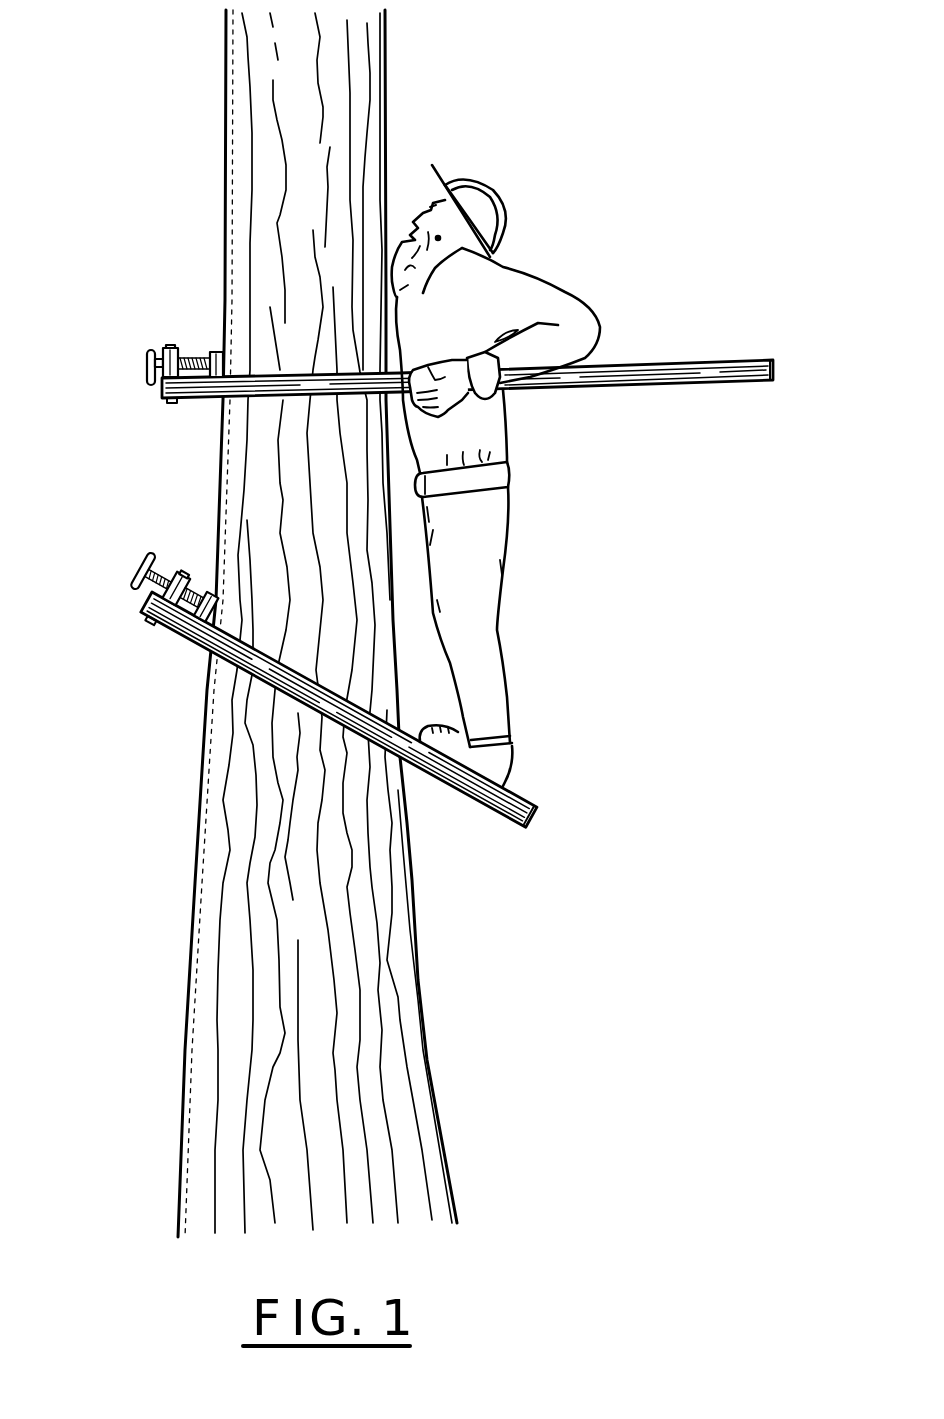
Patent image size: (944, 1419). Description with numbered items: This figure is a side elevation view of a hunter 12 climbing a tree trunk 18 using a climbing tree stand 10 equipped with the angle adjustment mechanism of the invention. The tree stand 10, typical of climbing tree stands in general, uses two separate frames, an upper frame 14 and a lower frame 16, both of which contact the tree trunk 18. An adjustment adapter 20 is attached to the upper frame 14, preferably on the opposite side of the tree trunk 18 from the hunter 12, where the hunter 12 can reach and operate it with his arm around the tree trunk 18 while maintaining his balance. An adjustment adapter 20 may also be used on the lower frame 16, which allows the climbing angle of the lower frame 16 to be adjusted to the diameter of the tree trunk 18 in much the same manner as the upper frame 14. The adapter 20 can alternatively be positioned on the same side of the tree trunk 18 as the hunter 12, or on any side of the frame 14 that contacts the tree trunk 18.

The tree stand 10 is at (425, 560).
The hunter 12 is at (522, 265).
The upper frame 14 is at (615, 362).
The lower frame 16 is at (523, 793).
The tree trunk 18 is at (225, 180).
The adjustment adapter 20 is at (160, 345).